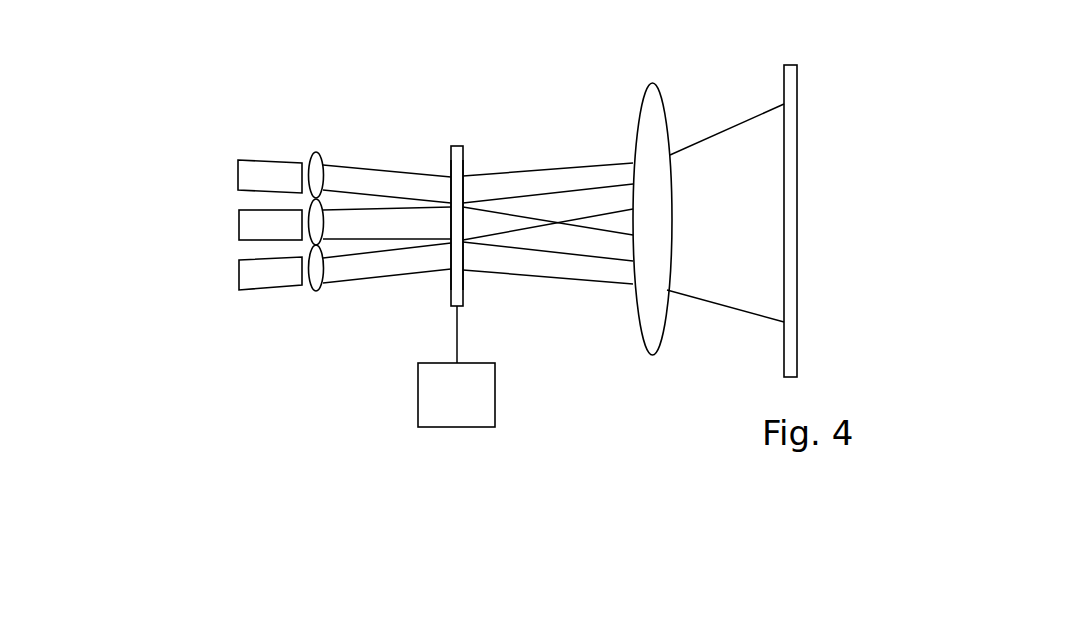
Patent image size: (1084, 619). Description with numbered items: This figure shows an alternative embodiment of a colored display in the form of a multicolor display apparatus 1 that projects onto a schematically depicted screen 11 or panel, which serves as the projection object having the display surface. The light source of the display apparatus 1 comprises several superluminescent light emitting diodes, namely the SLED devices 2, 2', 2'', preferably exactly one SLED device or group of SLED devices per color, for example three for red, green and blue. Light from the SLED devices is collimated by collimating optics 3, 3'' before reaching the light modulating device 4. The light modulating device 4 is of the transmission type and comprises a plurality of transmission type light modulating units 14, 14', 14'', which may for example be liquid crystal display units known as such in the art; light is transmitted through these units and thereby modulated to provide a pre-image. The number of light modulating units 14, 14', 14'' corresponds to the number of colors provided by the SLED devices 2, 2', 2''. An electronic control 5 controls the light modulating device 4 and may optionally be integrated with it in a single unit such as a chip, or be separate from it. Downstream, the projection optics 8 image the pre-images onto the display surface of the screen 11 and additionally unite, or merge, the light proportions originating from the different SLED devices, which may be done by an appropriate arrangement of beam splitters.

The display apparatus 1 is at (280, 409).
The superluminescent light emitting diode 2 is at (265, 144).
The SLED device 2' is at (228, 230).
The SLED device 2'' is at (246, 307).
The collimating optics 3 is at (339, 139).
The collimating optics 3'' is at (301, 301).
The light modulating device 4 is at (441, 128).
The electronic control 5 is at (443, 401).
The projection optics 8 is at (645, 302).
The screen 11 is at (791, 87).
The light modulating unit 14 is at (501, 144).
The light modulating unit 14' is at (424, 266).
The light modulating unit 14'' is at (514, 287).